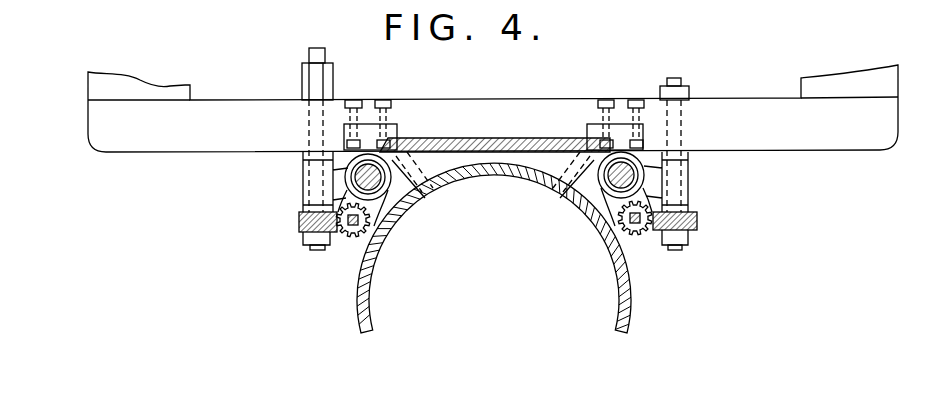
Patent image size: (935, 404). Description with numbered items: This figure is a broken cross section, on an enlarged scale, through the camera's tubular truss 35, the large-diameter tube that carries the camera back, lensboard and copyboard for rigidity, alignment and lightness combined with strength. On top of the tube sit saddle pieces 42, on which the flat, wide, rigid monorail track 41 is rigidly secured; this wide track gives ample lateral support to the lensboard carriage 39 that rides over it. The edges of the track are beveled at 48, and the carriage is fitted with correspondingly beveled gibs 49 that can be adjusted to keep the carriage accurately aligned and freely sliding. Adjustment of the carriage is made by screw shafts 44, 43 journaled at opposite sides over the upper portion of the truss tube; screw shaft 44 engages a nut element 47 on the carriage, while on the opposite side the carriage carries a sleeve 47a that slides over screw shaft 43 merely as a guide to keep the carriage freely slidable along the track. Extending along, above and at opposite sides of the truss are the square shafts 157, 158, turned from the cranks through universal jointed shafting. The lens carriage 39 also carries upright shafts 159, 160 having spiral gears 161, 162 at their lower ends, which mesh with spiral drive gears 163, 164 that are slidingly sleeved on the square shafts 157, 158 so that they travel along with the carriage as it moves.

The tubular truss 35 is at (372, 304).
The lensboard carriage 39 is at (893, 131).
The monorail track 41 is at (488, 134).
The saddle pieces 42 is at (550, 160).
The screw shaft 43 is at (635, 175).
The screw shaft 44 is at (355, 178).
The nut element 47 is at (330, 200).
The sleeve 47a is at (660, 195).
The beveled edges 48 is at (405, 132).
The beveled gibs 49 is at (360, 132).
The square shaft 157 is at (636, 226).
The square shaft 158 is at (355, 226).
The upright shaft 159 is at (681, 78).
The upright shaft 160 is at (322, 35).
The spiral gear 161 is at (697, 222).
The spiral gear 162 is at (299, 223).
The spiral drive gear 163 is at (650, 240).
The spiral drive gear 164 is at (342, 238).